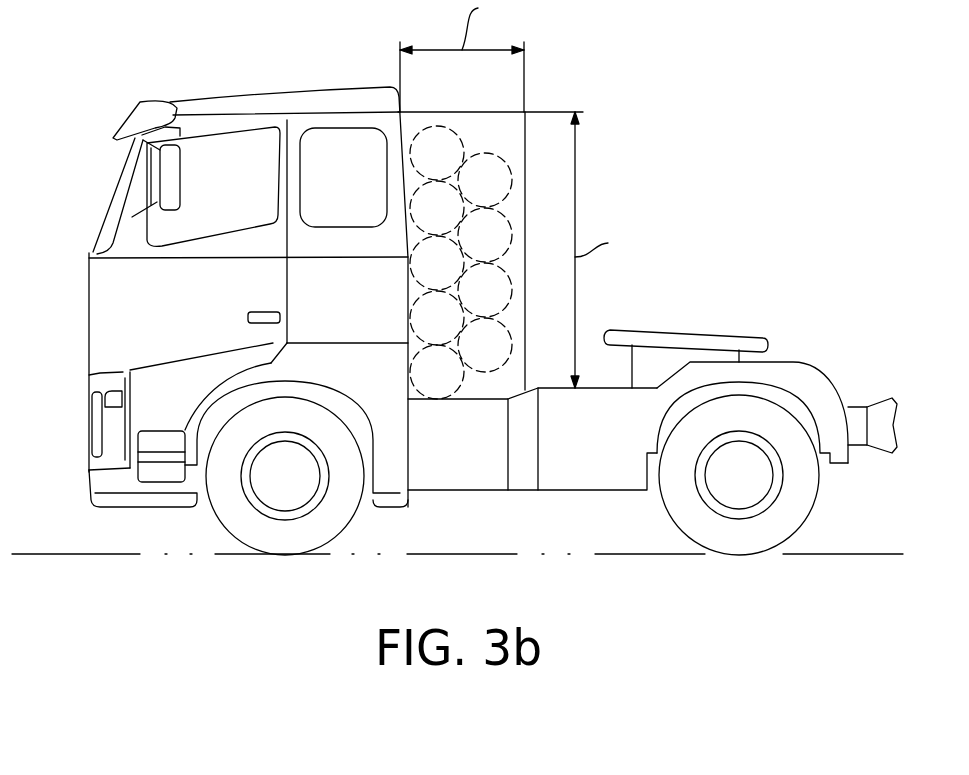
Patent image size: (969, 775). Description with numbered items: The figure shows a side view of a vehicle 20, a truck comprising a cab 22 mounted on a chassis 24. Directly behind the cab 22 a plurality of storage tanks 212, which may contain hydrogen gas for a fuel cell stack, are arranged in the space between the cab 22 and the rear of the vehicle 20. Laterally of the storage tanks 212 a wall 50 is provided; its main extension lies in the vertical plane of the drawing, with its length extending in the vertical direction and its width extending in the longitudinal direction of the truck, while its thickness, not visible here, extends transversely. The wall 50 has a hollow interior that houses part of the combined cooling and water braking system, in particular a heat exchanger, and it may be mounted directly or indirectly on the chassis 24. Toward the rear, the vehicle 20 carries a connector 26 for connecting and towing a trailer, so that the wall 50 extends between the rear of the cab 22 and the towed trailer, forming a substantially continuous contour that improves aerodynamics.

The vehicle 20 is at (142, 63).
The cab 22 is at (293, 103).
The chassis 24 is at (470, 445).
The connector 26 is at (693, 332).
The wall 50 is at (510, 208).
The storage tanks 212 is at (482, 182).